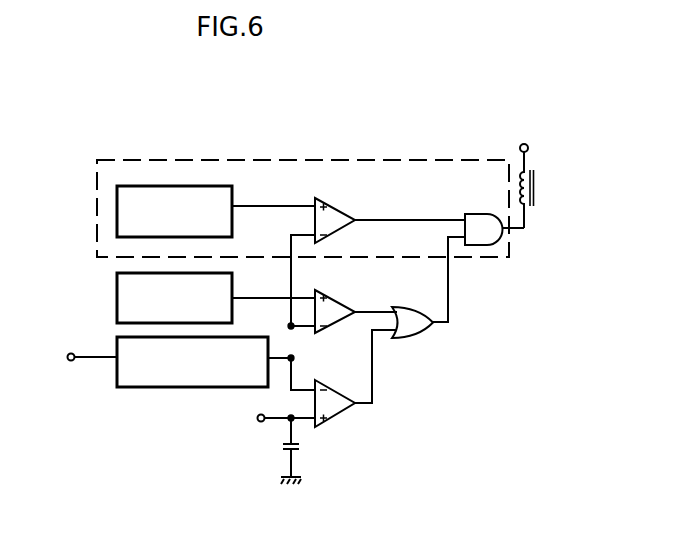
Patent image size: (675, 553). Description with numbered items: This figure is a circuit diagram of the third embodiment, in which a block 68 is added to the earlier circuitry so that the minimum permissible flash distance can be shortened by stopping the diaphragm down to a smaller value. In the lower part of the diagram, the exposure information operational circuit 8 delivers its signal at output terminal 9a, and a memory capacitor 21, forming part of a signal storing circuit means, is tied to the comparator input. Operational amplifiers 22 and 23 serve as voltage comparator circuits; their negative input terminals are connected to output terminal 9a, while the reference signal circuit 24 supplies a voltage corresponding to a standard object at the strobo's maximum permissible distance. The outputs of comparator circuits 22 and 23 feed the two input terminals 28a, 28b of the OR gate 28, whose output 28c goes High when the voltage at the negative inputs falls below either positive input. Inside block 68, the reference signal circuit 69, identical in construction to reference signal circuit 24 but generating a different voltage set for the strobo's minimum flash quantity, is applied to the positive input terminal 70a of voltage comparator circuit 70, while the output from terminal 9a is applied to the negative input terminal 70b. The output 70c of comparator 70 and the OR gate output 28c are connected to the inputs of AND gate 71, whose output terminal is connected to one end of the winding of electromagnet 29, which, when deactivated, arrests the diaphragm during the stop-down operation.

The block 68 is at (295, 160).
The reference signal circuit 69 is at (155, 186).
The voltage comparator circuit 70 is at (338, 200).
The positive input terminal 70a is at (285, 205).
The negative input terminal 70b is at (291, 247).
The output 70c is at (383, 221).
The AND gate 71 is at (476, 213).
The electromagnet 29 is at (536, 186).
The reference signal circuit 24 is at (117, 306).
The exposure information operational circuit 8 is at (172, 387).
The output terminal 9a is at (268, 389).
The operational amplifier 23 is at (318, 291).
The operational amplifier 22 is at (335, 384).
The memory capacitor 21 is at (300, 448).
The OR gate 28 is at (415, 307).
The input terminal of OR gate 28a is at (368, 311).
The input terminal of OR gate 28b is at (383, 333).
The output of OR gate 28c is at (440, 323).